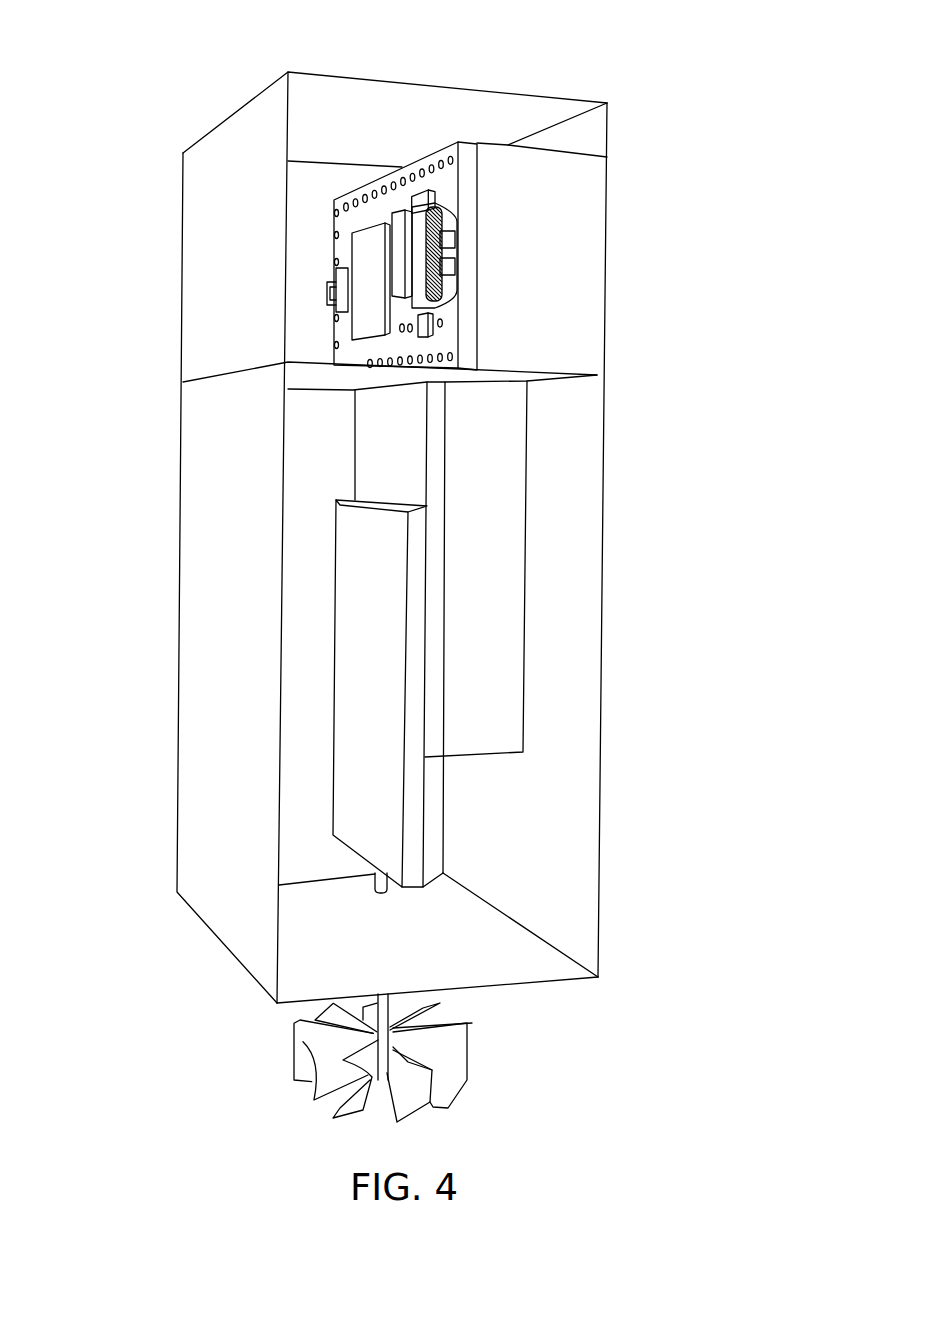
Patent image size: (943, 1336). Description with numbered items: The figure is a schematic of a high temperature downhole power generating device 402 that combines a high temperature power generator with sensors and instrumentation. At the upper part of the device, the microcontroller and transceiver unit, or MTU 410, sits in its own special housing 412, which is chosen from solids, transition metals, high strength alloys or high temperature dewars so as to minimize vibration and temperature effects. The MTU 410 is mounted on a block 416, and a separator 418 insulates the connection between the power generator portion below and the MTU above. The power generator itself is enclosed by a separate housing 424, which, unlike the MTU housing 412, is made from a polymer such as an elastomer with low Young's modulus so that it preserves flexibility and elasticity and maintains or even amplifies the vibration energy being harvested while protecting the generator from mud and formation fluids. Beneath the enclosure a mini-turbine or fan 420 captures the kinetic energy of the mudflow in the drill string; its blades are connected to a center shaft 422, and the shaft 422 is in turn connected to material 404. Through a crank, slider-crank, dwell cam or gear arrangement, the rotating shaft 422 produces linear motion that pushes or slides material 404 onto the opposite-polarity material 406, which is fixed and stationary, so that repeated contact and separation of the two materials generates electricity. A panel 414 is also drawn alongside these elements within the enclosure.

The high temperature downhole power generating device 402 is at (616, 36).
The material 404 is at (397, 792).
The material 406 is at (407, 464).
The microcontroller and transceiver unit (MTU) 410 is at (403, 290).
The housing 412 is at (345, 80).
The side panel 414 is at (510, 462).
The block 416 is at (572, 258).
The separator 418 is at (307, 376).
The mini-turbine or fan 420 is at (493, 1060).
The center shaft 422 is at (375, 873).
The housing 424 is at (178, 730).